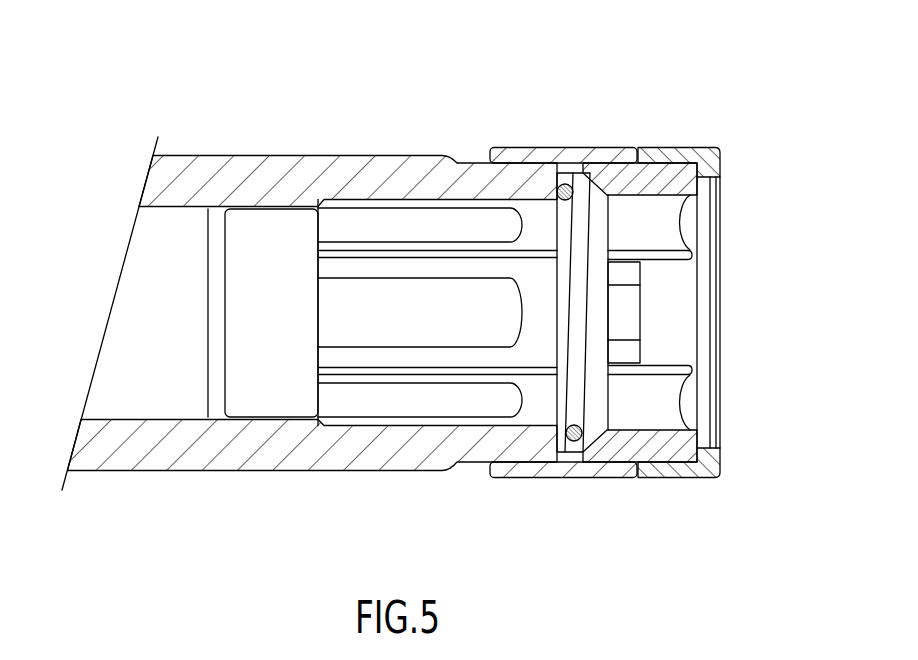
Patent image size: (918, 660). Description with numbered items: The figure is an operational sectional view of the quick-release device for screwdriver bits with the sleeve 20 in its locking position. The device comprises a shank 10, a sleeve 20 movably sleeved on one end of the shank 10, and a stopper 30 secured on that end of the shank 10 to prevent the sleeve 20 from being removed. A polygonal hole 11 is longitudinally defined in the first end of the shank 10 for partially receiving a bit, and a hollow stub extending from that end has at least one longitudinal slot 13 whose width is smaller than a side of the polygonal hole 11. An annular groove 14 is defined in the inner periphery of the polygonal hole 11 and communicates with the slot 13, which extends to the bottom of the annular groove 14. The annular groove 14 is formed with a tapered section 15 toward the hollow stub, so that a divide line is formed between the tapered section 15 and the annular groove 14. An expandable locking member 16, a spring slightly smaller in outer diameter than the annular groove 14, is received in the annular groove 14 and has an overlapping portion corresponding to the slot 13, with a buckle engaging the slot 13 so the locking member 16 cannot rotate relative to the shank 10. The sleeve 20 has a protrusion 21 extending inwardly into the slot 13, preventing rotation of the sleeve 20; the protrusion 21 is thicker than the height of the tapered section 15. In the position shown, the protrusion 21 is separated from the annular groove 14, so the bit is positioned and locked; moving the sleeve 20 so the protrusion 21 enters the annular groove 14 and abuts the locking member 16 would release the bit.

The shank 10 is at (279, 150).
The polygonal hole 11 is at (413, 303).
The slot 13 is at (673, 308).
The annular groove 14 is at (565, 443).
The tapered section 15 is at (598, 432).
The expandable locking member 16 is at (642, 157).
The sleeve 20 is at (562, 142).
The protrusion 21 is at (630, 300).
The stopper 30 is at (697, 147).